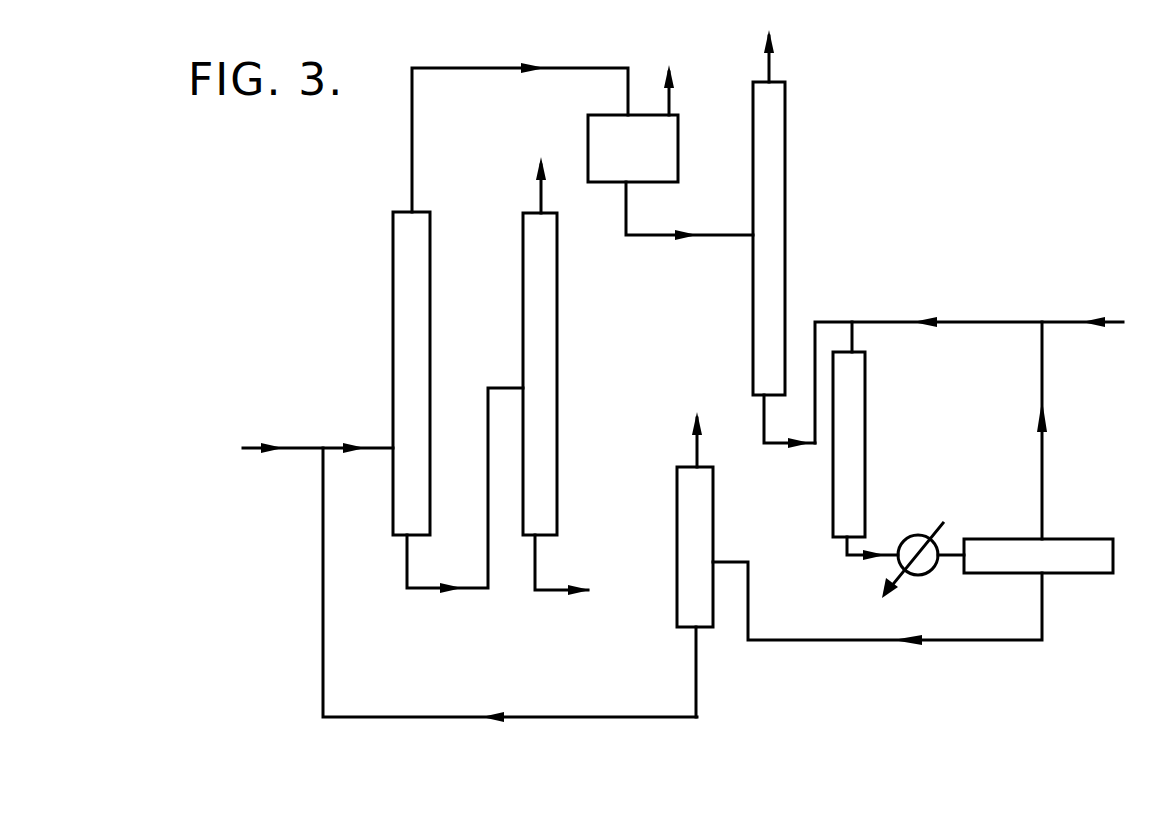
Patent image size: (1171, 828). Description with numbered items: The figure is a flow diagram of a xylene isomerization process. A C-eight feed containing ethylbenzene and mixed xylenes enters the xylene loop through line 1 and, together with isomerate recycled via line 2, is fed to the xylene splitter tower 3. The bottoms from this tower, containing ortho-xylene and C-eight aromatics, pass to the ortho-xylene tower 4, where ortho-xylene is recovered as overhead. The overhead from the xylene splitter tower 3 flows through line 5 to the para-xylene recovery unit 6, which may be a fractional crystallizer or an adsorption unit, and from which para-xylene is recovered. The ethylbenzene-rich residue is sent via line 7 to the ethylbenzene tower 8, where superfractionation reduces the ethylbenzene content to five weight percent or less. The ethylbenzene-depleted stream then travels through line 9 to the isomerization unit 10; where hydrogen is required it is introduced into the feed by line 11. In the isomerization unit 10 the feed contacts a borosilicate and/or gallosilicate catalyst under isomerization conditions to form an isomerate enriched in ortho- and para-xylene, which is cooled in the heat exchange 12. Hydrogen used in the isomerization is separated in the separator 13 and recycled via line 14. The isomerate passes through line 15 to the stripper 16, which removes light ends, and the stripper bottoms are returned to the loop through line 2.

The line 1 is at (292, 448).
The line 2 is at (352, 717).
The xylene splitter tower 3 is at (415, 312).
The ortho-xylene tower 4 is at (542, 318).
The line 5 is at (575, 68).
The para-xylene recovery unit 6 is at (663, 148).
The line 7 is at (657, 237).
The ethylbenzene tower 8 is at (773, 225).
The line 9 is at (766, 445).
The isomerization unit 10 is at (853, 482).
The line 11 is at (1001, 322).
The heat exchange 12 is at (920, 568).
The separator 13 is at (1103, 560).
The line 14 is at (1042, 400).
The line 15 is at (828, 640).
The stripper 16 is at (677, 608).